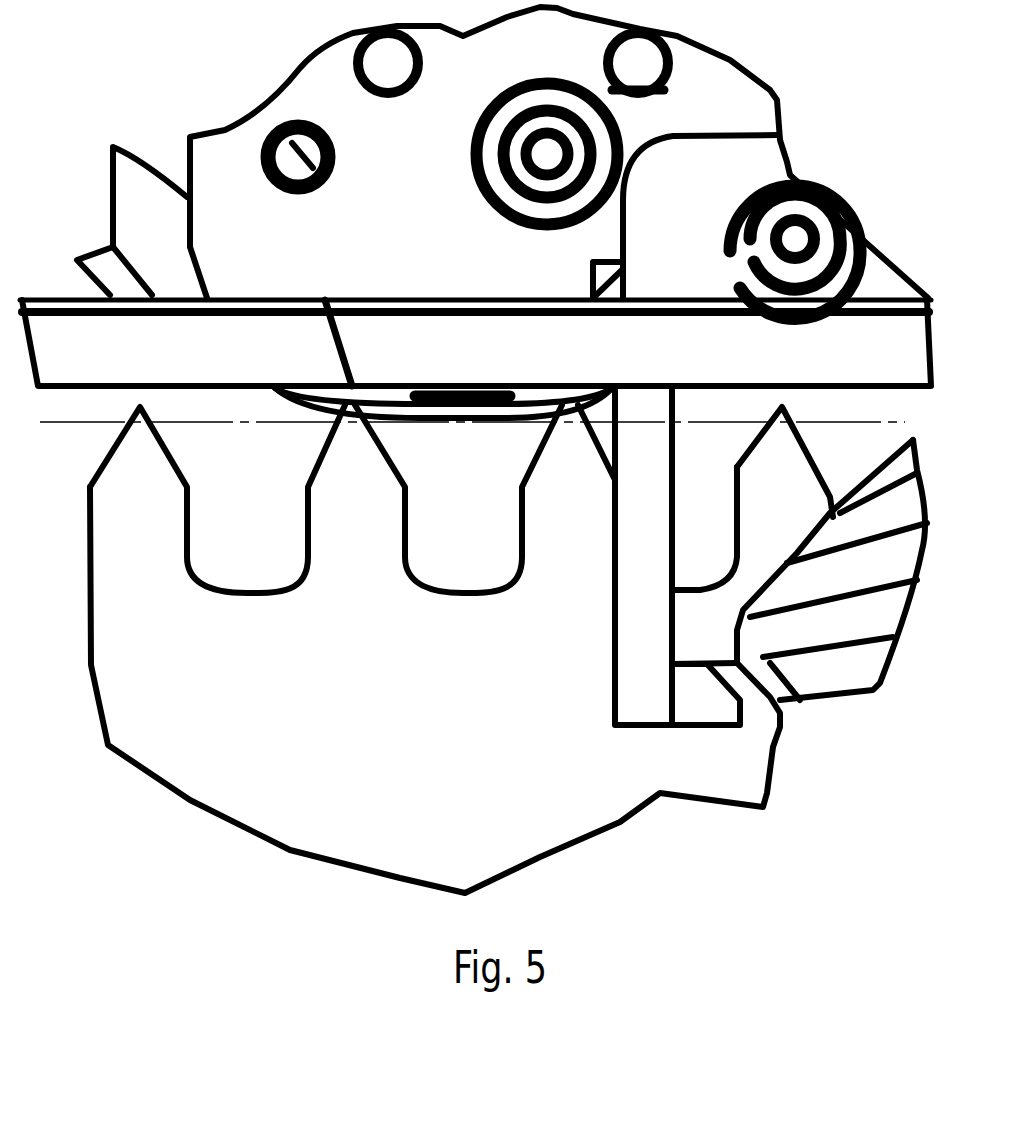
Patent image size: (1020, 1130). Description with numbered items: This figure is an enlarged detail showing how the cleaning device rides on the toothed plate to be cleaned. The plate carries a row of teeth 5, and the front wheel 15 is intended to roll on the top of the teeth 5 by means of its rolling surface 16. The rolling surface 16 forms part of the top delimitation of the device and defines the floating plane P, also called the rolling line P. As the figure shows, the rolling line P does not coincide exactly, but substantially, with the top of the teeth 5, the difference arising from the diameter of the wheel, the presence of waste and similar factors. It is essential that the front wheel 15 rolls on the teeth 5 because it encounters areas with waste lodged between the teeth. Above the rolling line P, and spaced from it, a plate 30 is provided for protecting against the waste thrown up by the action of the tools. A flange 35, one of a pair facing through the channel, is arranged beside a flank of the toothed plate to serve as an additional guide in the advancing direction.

The plate 30 is at (54, 318).
The teeth 5 is at (178, 462).
The rolling surface 16 is at (427, 423).
The front wheel 15 is at (467, 421).
The flange 35 is at (630, 693).
The floating plane P is at (85, 425).